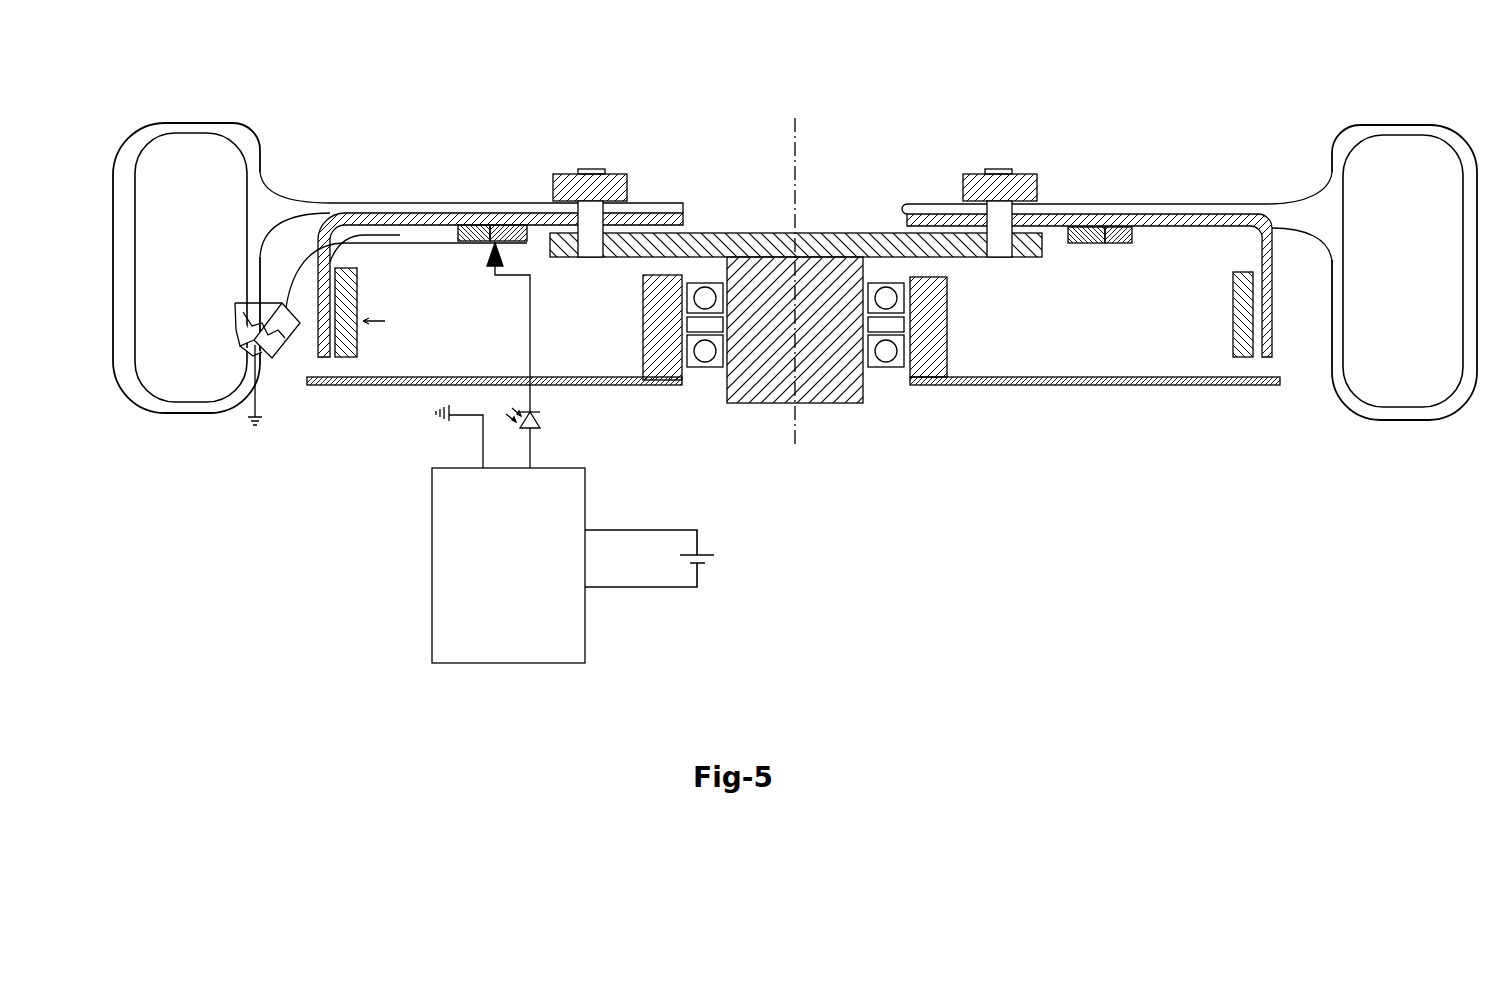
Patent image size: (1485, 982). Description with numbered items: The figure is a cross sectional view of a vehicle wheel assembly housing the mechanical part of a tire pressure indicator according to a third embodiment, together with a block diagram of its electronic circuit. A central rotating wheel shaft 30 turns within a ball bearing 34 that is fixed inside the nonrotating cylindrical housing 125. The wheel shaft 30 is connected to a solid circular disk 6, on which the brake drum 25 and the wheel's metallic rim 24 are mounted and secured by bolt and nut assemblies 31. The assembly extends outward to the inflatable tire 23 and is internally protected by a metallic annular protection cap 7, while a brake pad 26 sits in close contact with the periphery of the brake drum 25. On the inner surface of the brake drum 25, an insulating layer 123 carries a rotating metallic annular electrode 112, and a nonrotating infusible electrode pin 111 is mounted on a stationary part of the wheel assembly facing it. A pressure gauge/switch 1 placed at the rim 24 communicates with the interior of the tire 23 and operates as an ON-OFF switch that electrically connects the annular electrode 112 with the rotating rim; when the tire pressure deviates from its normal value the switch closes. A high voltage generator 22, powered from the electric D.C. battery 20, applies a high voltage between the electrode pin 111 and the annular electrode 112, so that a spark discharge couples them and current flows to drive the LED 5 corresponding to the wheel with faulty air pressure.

The pressure gauge/switch 1 is at (272, 356).
The LED 5 is at (534, 438).
The solid circular disk 6 is at (893, 233).
The metallic annular protection cap 7 is at (382, 386).
The electric D.C. battery 20 is at (663, 560).
The high voltage generator 22 is at (498, 663).
The inflatable tire 23 is at (151, 132).
The metallic rim 24 is at (270, 200).
The brake drum 25 is at (323, 358).
The brake pad 26 is at (347, 358).
The wheel shaft 30 is at (812, 403).
The bolt and nut assemblies 31 is at (587, 169).
The ball bearing 34 is at (702, 280).
The nonrotating infusible electrode pin 111 is at (488, 266).
The rotating metallic annular electrode 112 is at (497, 232).
The insulating layer 123 is at (472, 228).
The cylindrical housing 125 is at (660, 372).